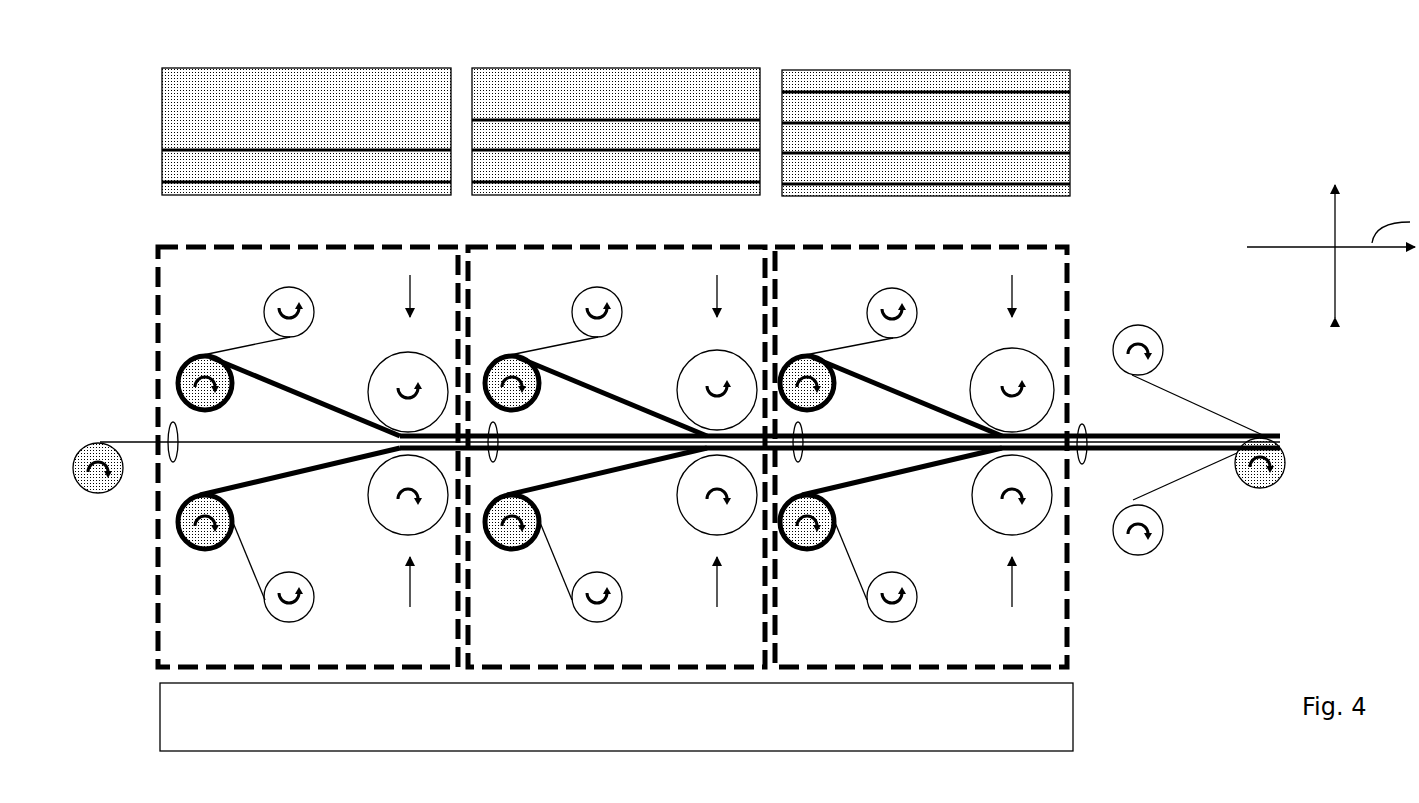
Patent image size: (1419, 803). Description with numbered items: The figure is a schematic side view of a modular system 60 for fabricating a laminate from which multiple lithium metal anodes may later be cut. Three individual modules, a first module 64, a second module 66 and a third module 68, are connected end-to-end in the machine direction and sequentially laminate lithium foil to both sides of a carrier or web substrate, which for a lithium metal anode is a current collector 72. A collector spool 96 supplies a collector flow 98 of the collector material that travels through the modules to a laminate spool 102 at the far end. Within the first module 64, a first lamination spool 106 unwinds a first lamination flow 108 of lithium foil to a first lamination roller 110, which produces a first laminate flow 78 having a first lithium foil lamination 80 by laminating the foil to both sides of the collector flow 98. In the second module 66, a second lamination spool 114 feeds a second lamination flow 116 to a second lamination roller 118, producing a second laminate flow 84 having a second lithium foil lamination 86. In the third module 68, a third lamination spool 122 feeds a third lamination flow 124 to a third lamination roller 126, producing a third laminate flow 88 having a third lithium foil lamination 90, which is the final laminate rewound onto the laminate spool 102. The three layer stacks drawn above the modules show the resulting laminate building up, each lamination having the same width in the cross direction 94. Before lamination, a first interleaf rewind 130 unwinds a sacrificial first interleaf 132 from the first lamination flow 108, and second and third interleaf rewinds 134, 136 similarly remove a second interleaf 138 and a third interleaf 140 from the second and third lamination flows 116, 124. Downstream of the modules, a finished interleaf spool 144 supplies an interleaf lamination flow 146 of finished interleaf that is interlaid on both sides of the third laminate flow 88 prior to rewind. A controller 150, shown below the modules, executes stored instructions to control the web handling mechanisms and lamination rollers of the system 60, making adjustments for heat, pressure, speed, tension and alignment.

The modular system 60 is at (1202, 77).
The first module 64 is at (203, 246).
The second module 66 is at (515, 246).
The third module 68 is at (825, 246).
The current collector 72 is at (1050, 80).
The first laminate flow 78 is at (495, 462).
The first lithium foil lamination 80 is at (616, 167).
The second laminate flow 84 is at (800, 462).
The second lithium foil lamination 86 is at (771, 135).
The third laminate flow 88 is at (1084, 464).
The third lithium foil lamination 90 is at (926, 105).
The cross direction 94 is at (1337, 212).
The collector spool 96 is at (103, 495).
The collector flow 98 is at (175, 462).
The laminate spool 102 is at (1270, 490).
The first lamination spool 106 is at (207, 340).
The first lamination flow 108 is at (300, 408).
The first lamination roller 110 is at (378, 355).
The second lamination spool 114 is at (515, 340).
The second lamination flow 116 is at (605, 408).
The second lamination roller 118 is at (675, 355).
The third lamination spool 122 is at (813, 335).
The third lamination flow 124 is at (915, 405).
The third lamination roller 126 is at (973, 345).
The first interleaf rewind 130 is at (258, 305).
The first interleaf 132 is at (252, 345).
The second interleaf rewind 134 is at (567, 300).
The third interleaf rewind 136 is at (866, 300).
The second interleaf 138 is at (560, 345).
The third interleaf 140 is at (855, 345).
The finished interleaf spool 144 is at (1115, 323).
The interleaf lamination flow 146 is at (1188, 398).
The controller 150 is at (616, 717).